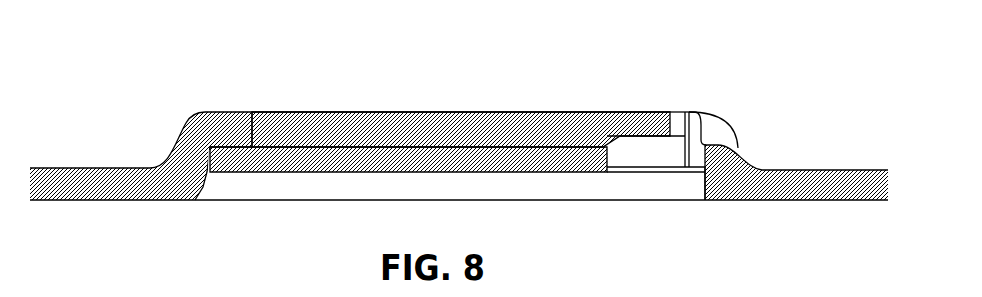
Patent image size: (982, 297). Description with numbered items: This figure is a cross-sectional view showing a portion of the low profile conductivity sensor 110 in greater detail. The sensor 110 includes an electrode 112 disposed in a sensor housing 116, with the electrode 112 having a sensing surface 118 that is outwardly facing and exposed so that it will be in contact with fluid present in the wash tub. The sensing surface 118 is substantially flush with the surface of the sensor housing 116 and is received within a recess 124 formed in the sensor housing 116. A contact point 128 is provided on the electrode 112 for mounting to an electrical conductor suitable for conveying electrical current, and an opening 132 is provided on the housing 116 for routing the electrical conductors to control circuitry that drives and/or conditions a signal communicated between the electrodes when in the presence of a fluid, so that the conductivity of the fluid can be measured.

The low profile conductivity sensor 110 is at (122, 110).
The electrode 112 is at (318, 118).
The sensor housing 116 is at (67, 177).
The sensing surface 118 is at (437, 112).
The recess 124 is at (542, 147).
The contact point 128 is at (645, 125).
The opening 132 is at (703, 193).